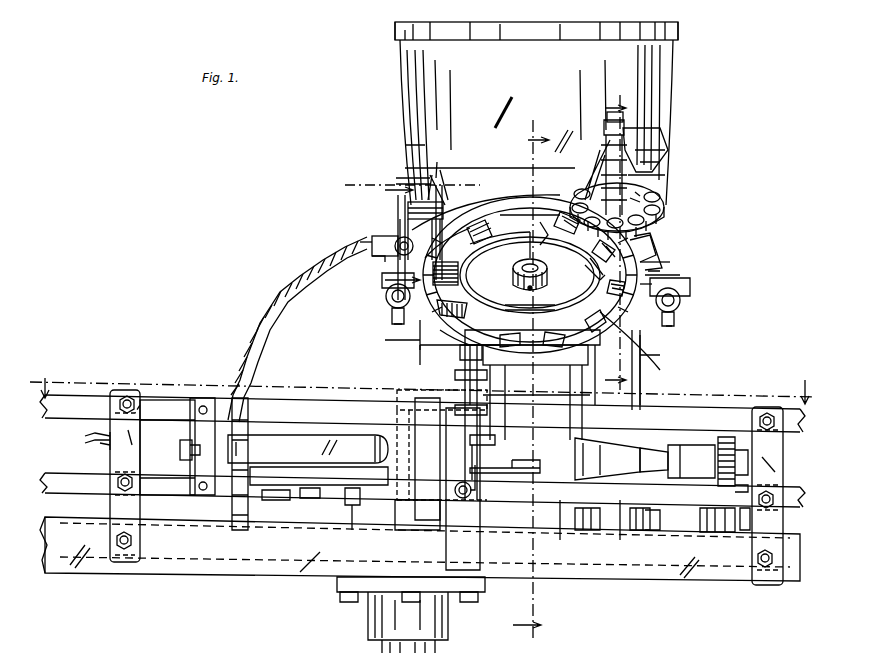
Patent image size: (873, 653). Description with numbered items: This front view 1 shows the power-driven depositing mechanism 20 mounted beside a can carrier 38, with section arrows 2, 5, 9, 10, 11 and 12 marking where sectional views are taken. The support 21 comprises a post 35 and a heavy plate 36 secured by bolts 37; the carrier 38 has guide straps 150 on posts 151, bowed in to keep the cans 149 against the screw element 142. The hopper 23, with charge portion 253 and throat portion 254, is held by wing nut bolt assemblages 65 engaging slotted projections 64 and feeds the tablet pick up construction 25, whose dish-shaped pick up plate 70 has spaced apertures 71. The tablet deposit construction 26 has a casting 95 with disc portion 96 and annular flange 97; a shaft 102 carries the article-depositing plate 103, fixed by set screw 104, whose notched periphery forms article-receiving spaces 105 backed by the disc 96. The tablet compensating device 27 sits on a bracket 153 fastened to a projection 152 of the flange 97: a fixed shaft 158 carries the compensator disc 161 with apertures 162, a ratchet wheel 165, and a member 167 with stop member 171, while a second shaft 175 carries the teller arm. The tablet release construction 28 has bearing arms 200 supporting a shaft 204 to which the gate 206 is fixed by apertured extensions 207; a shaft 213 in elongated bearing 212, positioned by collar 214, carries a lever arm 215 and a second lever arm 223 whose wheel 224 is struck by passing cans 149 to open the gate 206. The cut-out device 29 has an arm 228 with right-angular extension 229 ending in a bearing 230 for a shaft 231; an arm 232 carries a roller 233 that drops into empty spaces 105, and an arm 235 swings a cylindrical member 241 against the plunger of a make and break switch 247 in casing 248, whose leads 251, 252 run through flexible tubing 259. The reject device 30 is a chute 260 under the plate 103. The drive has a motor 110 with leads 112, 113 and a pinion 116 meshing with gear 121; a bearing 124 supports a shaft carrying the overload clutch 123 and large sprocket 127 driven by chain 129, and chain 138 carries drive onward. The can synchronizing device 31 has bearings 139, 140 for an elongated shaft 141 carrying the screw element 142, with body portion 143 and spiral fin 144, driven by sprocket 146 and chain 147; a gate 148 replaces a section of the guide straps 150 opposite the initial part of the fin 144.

The drive linkage 1 is at (665, 158).
The section line 2 is at (422, 379).
The section line 5 is at (531, 382).
The section line 9 is at (615, 239).
The section line 10 is at (405, 315).
The section line 11 is at (391, 235).
The section line 12 is at (350, 185).
The power-driven depositing mechanism 20 is at (254, 238).
The support 21 is at (298, 593).
The hopper 23 is at (386, 65).
The tablet pick up construction 25 is at (523, 175).
The tablet deposit construction 26 is at (677, 268).
The tablet compensating device 27 is at (680, 208).
The tablet release construction 28 is at (432, 373).
The cut-out device 29 is at (384, 226).
The reject device 30 is at (654, 387).
The can synchronizing device 31 is at (378, 401).
The post 35 is at (382, 648).
The heavy plate 36 is at (186, 575).
The bolts 37 is at (346, 602).
The can carrier 38 is at (98, 583).
The slotted projection 64 is at (386, 294).
The wing nut bolt assemblages 65 is at (390, 312).
The tablet pick up plate 70 is at (544, 200).
The spaced apertures 71 is at (540, 262).
The casting 95 is at (680, 274).
The disc portion 96 is at (642, 360).
The annular flange 97 is at (660, 286).
The shaft 102 is at (580, 283).
The article-depositing plate 103 is at (664, 260).
The set screw 104 is at (528, 288).
The article-receiving spaces 105 is at (600, 273).
The motor 110 is at (162, 420).
The lead 112 is at (96, 443).
The lead 113 is at (82, 436).
The pinion 116 is at (285, 485).
The gear 121 is at (274, 510).
The overload clutch 123 is at (314, 507).
The bearing 124 is at (417, 515).
The large sprocket 127 is at (366, 449).
The continuous chain 129 is at (362, 525).
The continuous chain 138 is at (648, 530).
The bearing 139 is at (180, 442).
The bearing 140 is at (694, 445).
The elongated shaft 141 is at (184, 452).
The screw element 142 is at (650, 448).
The body portion 143 is at (592, 532).
The spiral fin 144 is at (592, 440).
The small sprocket 146 is at (742, 532).
The continuous chain 147 is at (728, 437).
The gate 148 is at (312, 432).
The cans 149 is at (378, 382).
The guide straps 150 is at (68, 398).
The posts 151 is at (130, 392).
The projection 152 is at (665, 260).
The bracket 153 is at (650, 243).
The shaft 158 is at (660, 135).
The compensator disc 161 is at (660, 214).
The spaced apertures 162 is at (640, 205).
The ratchet wheel 165 is at (548, 240).
The member 167 is at (598, 140).
The stop member 171 is at (646, 194).
The second shaft 175 is at (640, 118).
The bearing arms 200 is at (505, 272).
The shaft 204 is at (580, 350).
The gate 206 is at (520, 375).
The apertured extensions 207 is at (520, 330).
The elongated bearing 212 is at (455, 375).
The shaft 213 is at (470, 452).
The collar 214 is at (497, 438).
The lever arm 215 is at (475, 422).
The second lever arm 223 is at (485, 490).
The wheel 224 is at (545, 457).
The arm 228 is at (446, 172).
The right-angular extension 229 is at (392, 335).
The bearing 230 is at (433, 160).
The shaft 231 is at (470, 198).
The arm 232 is at (500, 250).
The roller 233 is at (460, 276).
The arm 235 is at (408, 210).
The cylindrical member 241 is at (358, 243).
The make and break switch 247 is at (372, 258).
The casing 248 is at (370, 238).
The lead 251 is at (268, 297).
The lead 252 is at (262, 310).
The charge portion 253 is at (418, 26).
The throat portion 254 is at (396, 180).
The flexible tubing 259 is at (246, 348).
The chute 260 is at (662, 372).